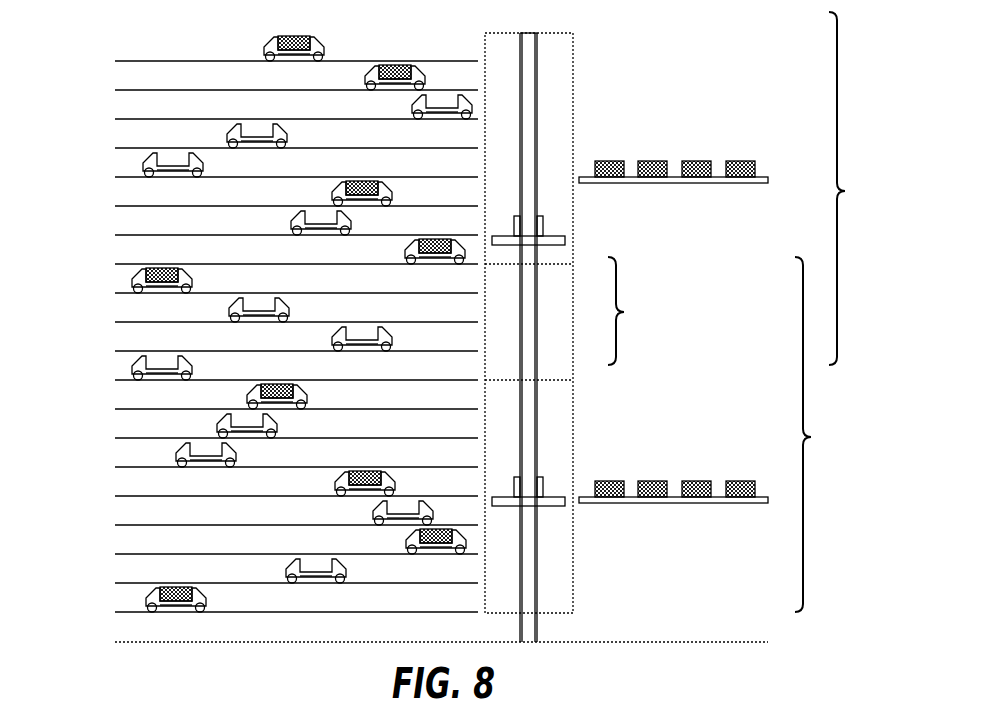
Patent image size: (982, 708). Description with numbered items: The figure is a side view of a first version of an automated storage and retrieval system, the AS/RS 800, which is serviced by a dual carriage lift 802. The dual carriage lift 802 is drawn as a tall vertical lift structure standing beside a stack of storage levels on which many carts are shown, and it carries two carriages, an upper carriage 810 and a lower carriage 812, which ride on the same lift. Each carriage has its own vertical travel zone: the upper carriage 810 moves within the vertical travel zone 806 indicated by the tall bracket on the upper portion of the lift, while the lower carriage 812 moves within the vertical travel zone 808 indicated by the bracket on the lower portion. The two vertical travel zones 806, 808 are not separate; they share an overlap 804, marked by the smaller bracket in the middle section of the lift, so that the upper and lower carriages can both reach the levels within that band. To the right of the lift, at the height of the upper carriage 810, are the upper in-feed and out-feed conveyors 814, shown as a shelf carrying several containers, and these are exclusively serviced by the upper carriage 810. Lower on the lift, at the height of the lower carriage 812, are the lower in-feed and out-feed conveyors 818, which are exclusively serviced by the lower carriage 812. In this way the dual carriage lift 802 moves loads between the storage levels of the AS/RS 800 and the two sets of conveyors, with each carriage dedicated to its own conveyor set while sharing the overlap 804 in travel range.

The AS/RS 800 is at (98, 78).
The dual carriage lift 802 is at (527, 80).
The overlap 804 is at (578, 318).
The vertical travel zone 806 is at (687, 188).
The vertical travel zone 808 is at (826, 434).
The carriage 810 is at (555, 229).
The carriage 812 is at (555, 504).
The upper in-feed and out-feed conveyors 814 is at (717, 175).
The lower in-feed and out-feed conveyors 818 is at (695, 504).